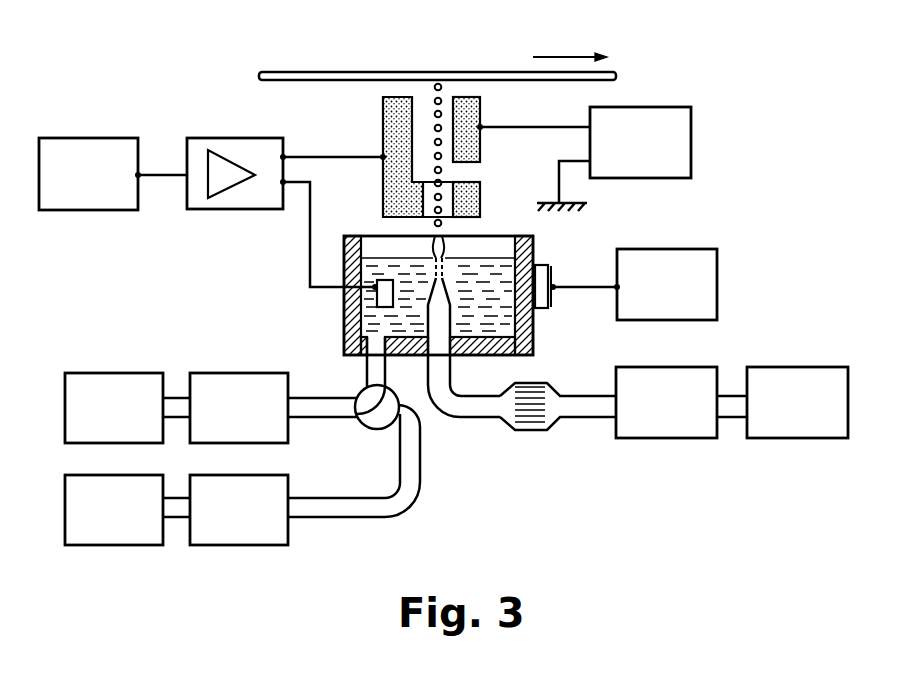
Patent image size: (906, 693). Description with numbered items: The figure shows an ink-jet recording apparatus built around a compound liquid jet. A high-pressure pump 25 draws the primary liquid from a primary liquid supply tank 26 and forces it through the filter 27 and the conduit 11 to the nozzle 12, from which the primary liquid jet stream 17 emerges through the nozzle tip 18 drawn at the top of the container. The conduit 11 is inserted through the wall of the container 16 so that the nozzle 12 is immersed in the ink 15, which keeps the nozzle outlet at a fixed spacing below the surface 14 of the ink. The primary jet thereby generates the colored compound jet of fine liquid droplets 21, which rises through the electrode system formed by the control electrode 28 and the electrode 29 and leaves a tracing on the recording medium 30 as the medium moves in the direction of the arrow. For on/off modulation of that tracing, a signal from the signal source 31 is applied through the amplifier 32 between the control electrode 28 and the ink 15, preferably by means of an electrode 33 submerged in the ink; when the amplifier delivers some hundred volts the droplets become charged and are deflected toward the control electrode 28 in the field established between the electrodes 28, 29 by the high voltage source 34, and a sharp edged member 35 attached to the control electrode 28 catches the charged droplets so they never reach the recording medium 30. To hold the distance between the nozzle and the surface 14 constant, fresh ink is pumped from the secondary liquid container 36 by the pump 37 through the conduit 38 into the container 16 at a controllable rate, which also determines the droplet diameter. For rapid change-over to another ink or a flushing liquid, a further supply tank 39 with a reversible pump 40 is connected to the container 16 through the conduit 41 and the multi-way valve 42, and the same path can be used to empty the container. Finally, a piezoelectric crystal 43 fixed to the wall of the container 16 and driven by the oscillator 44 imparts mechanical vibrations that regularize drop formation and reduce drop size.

The conduit 11 is at (442, 375).
The nozzle 12 is at (440, 297).
The surface 14 is at (428, 291).
The ink 15 is at (493, 318).
The container 16 is at (353, 326).
The primary liquid jet stream 17 is at (434, 268).
The nozzle orifice 18 is at (442, 249).
The compound jet of fine liquid droplets 21 is at (434, 224).
The high-pressure pump 25 is at (654, 416).
The primary liquid supply tank 26 is at (784, 416).
The filter 27 is at (530, 427).
The control electrode 28 is at (387, 192).
The electrode 29 is at (467, 105).
The recording medium 30 is at (348, 72).
The signal source 31 is at (75, 183).
The amplifier 32 is at (254, 198).
The electrode 33 is at (382, 297).
The high voltage source 34 is at (627, 153).
The sharp edged member 35 is at (413, 97).
The secondary liquid container 36 is at (101, 418).
The pump 37 is at (226, 418).
The conduit 38 is at (330, 405).
The further supply tank 39 is at (101, 521).
The pump 40 is at (226, 521).
The conduit 41 is at (362, 510).
The multi-way valve 42 is at (380, 422).
The piezoelectric crystal 43 is at (538, 300).
The oscillator 44 is at (654, 298).